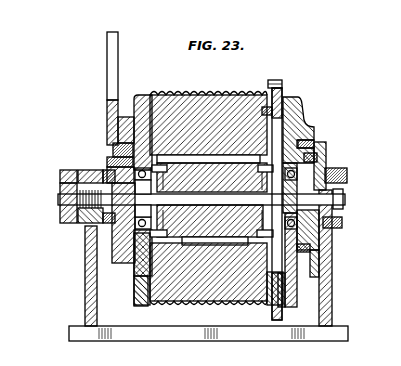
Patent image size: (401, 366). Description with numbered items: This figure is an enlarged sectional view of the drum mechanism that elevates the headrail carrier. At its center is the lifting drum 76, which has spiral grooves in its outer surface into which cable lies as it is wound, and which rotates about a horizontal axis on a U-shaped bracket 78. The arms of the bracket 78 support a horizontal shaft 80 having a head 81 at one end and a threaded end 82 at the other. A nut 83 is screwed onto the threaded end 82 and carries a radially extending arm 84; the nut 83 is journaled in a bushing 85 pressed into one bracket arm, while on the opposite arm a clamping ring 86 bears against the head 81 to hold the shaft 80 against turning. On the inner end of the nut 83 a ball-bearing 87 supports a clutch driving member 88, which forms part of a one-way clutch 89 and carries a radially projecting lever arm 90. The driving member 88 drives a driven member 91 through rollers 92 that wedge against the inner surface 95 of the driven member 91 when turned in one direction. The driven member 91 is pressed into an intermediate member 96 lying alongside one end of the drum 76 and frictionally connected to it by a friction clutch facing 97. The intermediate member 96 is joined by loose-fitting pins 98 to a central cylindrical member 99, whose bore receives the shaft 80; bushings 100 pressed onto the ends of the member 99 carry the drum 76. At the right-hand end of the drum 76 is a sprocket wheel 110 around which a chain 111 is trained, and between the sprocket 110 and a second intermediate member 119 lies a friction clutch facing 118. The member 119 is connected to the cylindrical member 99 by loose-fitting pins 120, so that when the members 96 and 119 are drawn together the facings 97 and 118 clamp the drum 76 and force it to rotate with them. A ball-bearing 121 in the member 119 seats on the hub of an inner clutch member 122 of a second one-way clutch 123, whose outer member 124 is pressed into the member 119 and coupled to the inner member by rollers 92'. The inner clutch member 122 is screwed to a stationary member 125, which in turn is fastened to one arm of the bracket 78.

The lifting drum 76 is at (196, 92).
The U-shaped bracket 78 is at (85, 290).
The horizontal shaft 80 is at (199, 198).
The head 81 is at (344, 197).
The threaded end 82 is at (62, 194).
The nut 83 is at (62, 205).
The radially extending arm 84 is at (66, 219).
The bushing 85 is at (98, 172).
The clamping ring 86 is at (333, 168).
The ball-bearing 87 is at (104, 163).
The clutch driving member 88 is at (128, 236).
The one-way clutch 89 is at (112, 143).
The lever arm 90 is at (107, 47).
The driven member 91 is at (128, 278).
The rollers 92 is at (99, 222).
The rollers 92' is at (328, 248).
The inner surface 95 is at (36, 362).
The intermediate member 96 is at (122, 118).
The friction clutch facing 97 is at (146, 96).
The loose-fitting pins 98 is at (166, 181).
The central cylindrical member 99 is at (223, 158).
The bushings 100 is at (170, 163).
The sprocket wheel 110 is at (283, 98).
The chain 111 is at (282, 82).
The friction clutch facing 118 is at (283, 108).
The second intermediate member 119 is at (300, 124).
The loose-fitting pins 120 is at (262, 181).
The ball-bearing 121 is at (283, 228).
The inner clutch member 122 is at (320, 227).
The one-way clutch 123 is at (306, 138).
The outer member 124 is at (312, 258).
The stationary member 125 is at (342, 213).